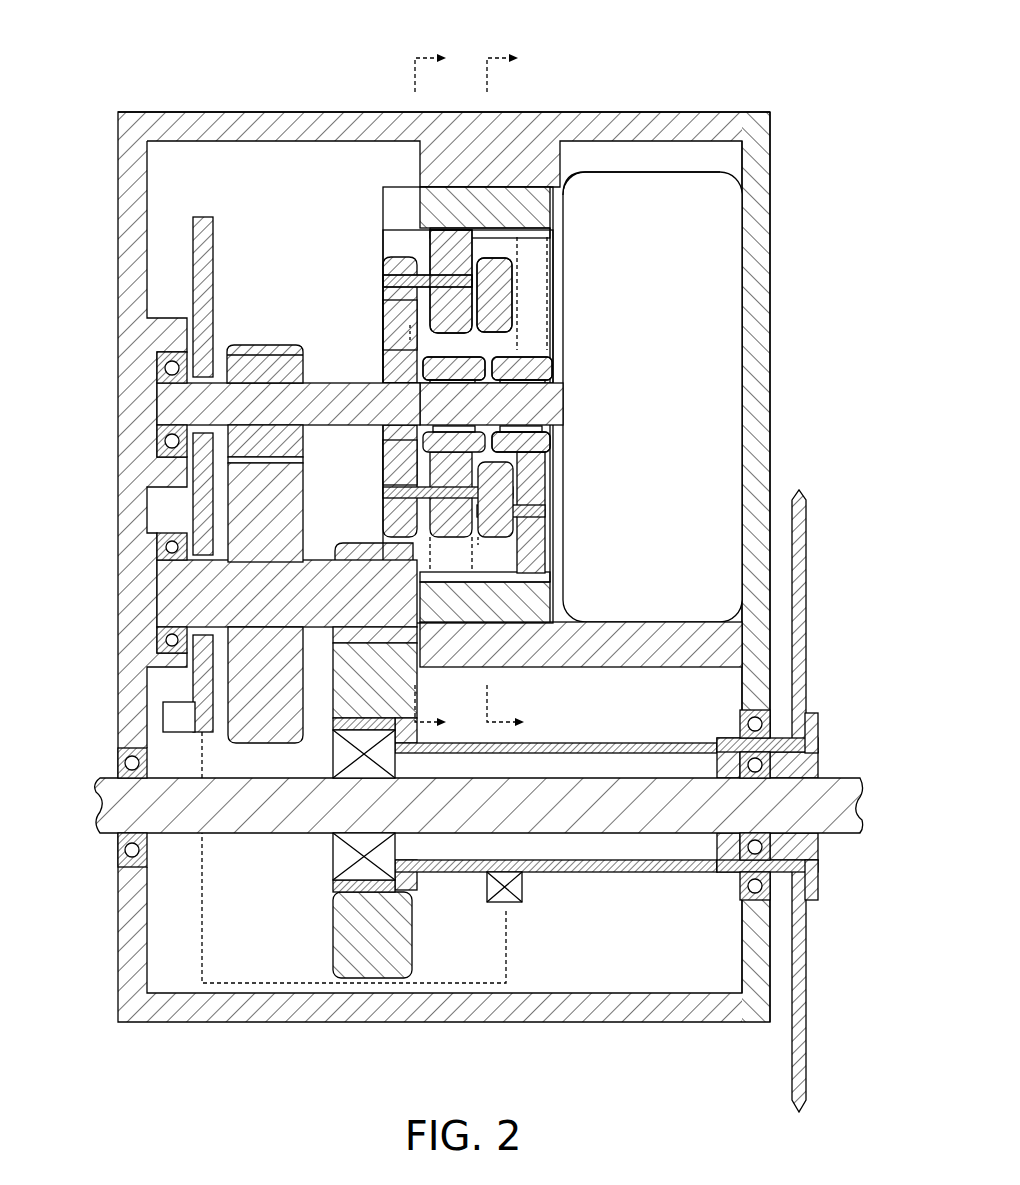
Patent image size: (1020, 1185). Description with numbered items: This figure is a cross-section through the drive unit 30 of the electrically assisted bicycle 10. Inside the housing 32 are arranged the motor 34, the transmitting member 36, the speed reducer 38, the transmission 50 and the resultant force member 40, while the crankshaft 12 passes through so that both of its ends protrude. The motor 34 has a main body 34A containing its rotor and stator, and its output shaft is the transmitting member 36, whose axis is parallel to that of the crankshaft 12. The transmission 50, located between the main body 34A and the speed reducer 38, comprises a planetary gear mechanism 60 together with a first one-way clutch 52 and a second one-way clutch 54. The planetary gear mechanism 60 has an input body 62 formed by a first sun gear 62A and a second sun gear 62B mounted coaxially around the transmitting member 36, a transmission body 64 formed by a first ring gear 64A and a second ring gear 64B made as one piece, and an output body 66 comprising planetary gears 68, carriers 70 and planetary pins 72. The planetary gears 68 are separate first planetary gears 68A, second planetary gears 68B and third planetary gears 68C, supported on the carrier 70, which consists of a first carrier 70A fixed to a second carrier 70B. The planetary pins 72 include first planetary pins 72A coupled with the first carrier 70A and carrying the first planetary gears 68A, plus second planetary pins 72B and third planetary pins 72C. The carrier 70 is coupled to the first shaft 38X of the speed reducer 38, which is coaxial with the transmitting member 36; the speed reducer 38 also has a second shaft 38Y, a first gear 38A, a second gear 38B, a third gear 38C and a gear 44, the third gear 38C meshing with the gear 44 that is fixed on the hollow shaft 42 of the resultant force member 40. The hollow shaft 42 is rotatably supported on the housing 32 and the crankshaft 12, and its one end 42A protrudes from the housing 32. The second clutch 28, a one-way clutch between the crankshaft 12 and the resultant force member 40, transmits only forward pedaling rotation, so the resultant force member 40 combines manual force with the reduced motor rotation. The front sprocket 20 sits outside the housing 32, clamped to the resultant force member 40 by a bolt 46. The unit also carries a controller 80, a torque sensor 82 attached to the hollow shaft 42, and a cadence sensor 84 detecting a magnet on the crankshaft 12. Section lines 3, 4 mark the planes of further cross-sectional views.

The electrically assisted bicycle 10 is at (793, 52).
The crankshaft 12 is at (236, 835).
The front sprocket 20 is at (806, 540).
The second clutch 28 is at (333, 762).
The drive unit 30 is at (338, 58).
The housing 32 is at (312, 112).
The motor 34 is at (711, 152).
The main body 34A is at (626, 172).
The transmitting member 36 is at (565, 404).
The speed reducer 38 is at (261, 299).
The first gear 38A is at (240, 350).
The second gear 38B is at (215, 512).
The third gear 38C is at (335, 640).
The first shaft 38X is at (333, 380).
The second shaft 38Y is at (158, 595).
The resultant force member 40 is at (438, 724).
The hollow shaft 42 is at (618, 742).
The one end 42A is at (790, 718).
The gear 44 is at (330, 692).
The bolt 46 is at (820, 737).
The transmission 50 is at (321, 212).
The first one-way clutch 52 is at (553, 378).
The second one-way clutch 54 is at (423, 372).
The planetary gear mechanism 60 is at (299, 239).
The input body 62 is at (648, 352).
The first sun gear 62A is at (553, 366).
The second sun gear 62B is at (415, 348).
The transmission body 64 is at (654, 202).
The first ring gear 64A is at (563, 214).
The second ring gear 64B is at (420, 195).
The output body 66 is at (671, 449).
The planetary gears 68 is at (644, 541).
The first planetary gears 68A is at (550, 250).
The second planetary gears 68B is at (410, 330).
The third planetary gears 68C is at (432, 245).
The carrier 70 is at (631, 274).
The first carrier 70A is at (513, 280).
The second carrier 70B is at (385, 263).
The planetary pins 72 is at (644, 489).
The first planetary pins 72A is at (547, 490).
The second planetary pins 72B is at (383, 490).
The third planetary pins 72C is at (385, 282).
The controller 80 is at (197, 220).
The torque sensor 82 is at (522, 886).
The cadence sensor 84 is at (188, 733).
The section line 3 is at (515, 382).
The section line 4 is at (434, 378).